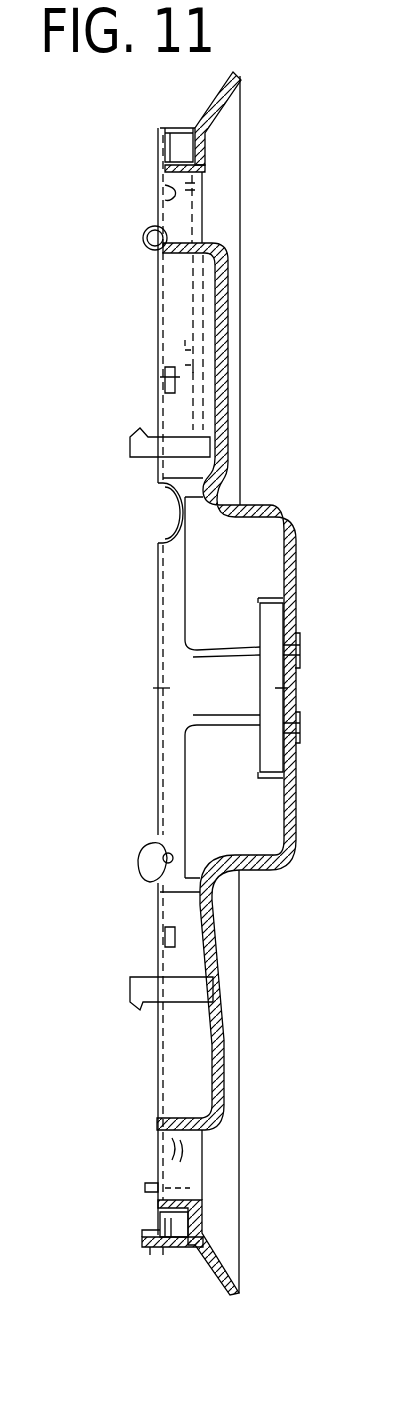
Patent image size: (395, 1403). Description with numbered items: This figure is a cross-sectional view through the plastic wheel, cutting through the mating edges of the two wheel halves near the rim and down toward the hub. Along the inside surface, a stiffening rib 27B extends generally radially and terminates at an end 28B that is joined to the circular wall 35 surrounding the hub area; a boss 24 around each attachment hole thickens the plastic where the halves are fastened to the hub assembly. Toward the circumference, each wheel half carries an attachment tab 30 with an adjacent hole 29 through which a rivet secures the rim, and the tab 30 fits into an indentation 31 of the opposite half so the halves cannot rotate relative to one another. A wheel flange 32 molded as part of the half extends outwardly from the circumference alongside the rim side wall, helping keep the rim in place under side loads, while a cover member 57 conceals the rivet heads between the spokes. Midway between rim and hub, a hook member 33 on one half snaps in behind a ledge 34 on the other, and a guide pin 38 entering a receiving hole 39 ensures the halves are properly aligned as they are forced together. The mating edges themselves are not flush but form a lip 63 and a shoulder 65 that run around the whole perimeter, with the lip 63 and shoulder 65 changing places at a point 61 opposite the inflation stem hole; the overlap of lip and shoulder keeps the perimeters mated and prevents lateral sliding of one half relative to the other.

The boss 24 is at (300, 660).
The stiffening rib 27B is at (270, 537).
The rib end 28B is at (190, 648).
The hole 29 is at (165, 852).
The attachment tab 30 is at (148, 245).
The indentation 31 is at (160, 128).
The wheel flange 32 is at (218, 100).
The hook member 33 is at (140, 445).
The ledge 34 is at (165, 382).
The circular wall 35 is at (268, 595).
The guide pin 38 is at (148, 1185).
The receiving hole 39 is at (168, 197).
The cover member 57 is at (200, 1205).
The point 61 is at (155, 688).
The lip 63 is at (190, 130).
The shoulder 65 is at (180, 150).